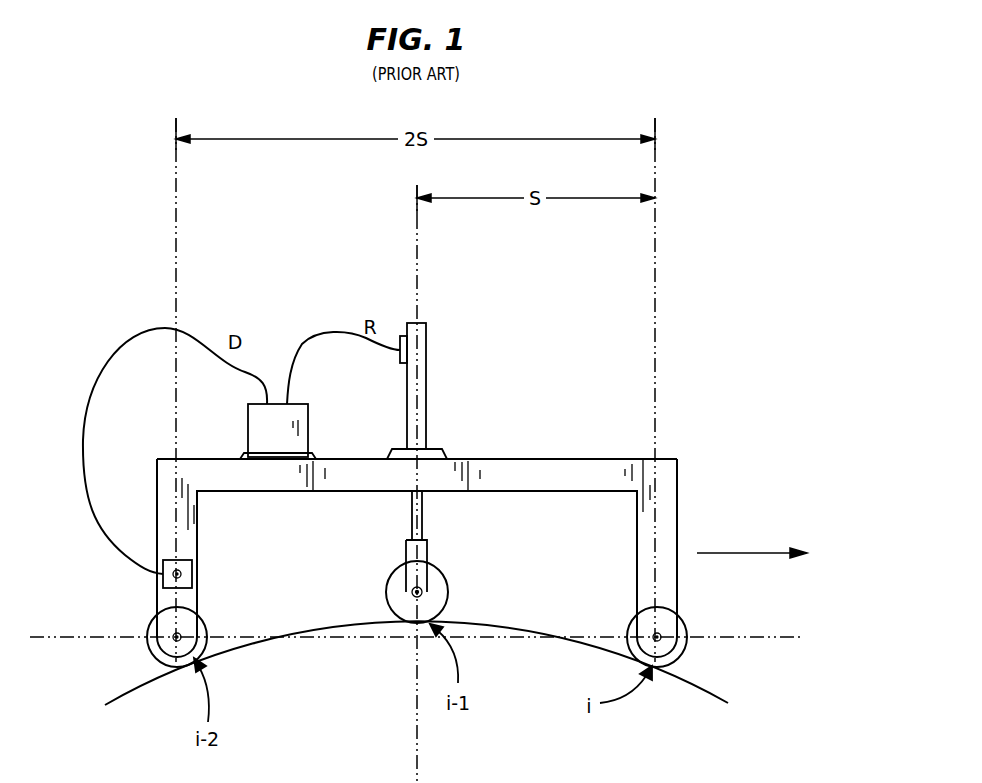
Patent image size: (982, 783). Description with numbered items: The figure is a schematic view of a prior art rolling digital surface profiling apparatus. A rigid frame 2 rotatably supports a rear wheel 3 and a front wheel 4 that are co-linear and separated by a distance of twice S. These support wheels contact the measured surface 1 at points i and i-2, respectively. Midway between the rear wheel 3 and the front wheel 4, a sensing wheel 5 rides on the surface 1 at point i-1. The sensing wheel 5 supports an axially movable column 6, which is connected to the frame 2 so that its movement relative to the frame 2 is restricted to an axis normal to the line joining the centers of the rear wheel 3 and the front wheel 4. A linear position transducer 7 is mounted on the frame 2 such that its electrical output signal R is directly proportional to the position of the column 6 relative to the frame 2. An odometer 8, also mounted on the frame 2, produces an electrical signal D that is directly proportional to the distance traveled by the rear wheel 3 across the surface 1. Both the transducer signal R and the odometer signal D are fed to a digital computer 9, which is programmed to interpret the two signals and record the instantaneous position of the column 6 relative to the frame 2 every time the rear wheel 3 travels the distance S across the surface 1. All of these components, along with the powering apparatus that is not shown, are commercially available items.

The measured surface 1 is at (705, 686).
The rigid frame 2 is at (620, 459).
The rear wheel 3 is at (205, 625).
The front wheel 4 is at (685, 625).
The sensing wheel 5 is at (446, 585).
The axially movable column 6 is at (412, 530).
The linear position transducer 7 is at (427, 352).
The odometer 8 is at (197, 570).
The digital computer 9 is at (278, 431).